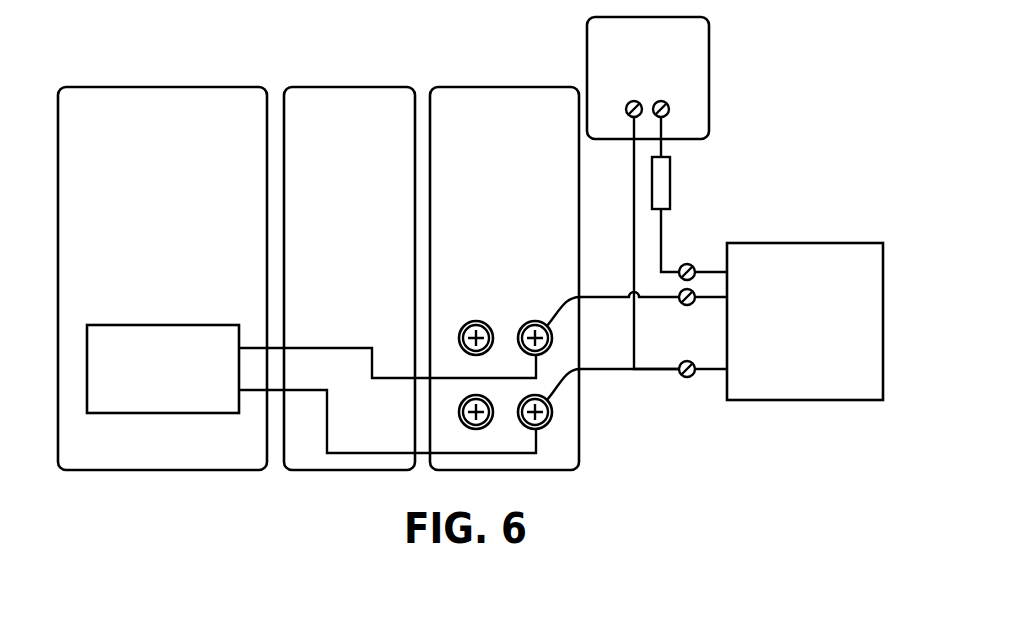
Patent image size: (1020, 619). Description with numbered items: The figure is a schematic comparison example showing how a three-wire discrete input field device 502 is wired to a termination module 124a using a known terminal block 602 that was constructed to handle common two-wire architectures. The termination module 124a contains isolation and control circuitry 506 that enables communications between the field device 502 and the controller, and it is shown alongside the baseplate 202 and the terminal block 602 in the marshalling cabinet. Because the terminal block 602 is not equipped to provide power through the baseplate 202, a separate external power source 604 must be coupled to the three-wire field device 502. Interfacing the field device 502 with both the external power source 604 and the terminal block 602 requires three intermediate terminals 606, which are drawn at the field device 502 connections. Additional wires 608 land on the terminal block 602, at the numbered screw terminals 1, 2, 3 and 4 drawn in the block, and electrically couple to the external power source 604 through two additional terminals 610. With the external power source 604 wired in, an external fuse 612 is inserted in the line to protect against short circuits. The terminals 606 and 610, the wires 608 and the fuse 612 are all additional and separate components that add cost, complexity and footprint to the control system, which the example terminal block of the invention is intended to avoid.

The termination module 124a is at (110, 87).
The baseplate 202 is at (337, 87).
The terminal block 602 is at (482, 87).
The terminal 1 is at (472, 344).
The terminal 2 is at (472, 419).
The terminal 3 is at (532, 344).
The terminal 4 is at (532, 419).
The isolation and control circuitry 506 is at (163, 325).
The external power source 604 is at (709, 67).
The additional terminals 610 is at (641, 100).
The external fuse 612 is at (670, 183).
The additional wires 608 is at (620, 200).
The intermediate terminals 606 is at (694, 291).
The 3-wire field device 502 is at (830, 243).